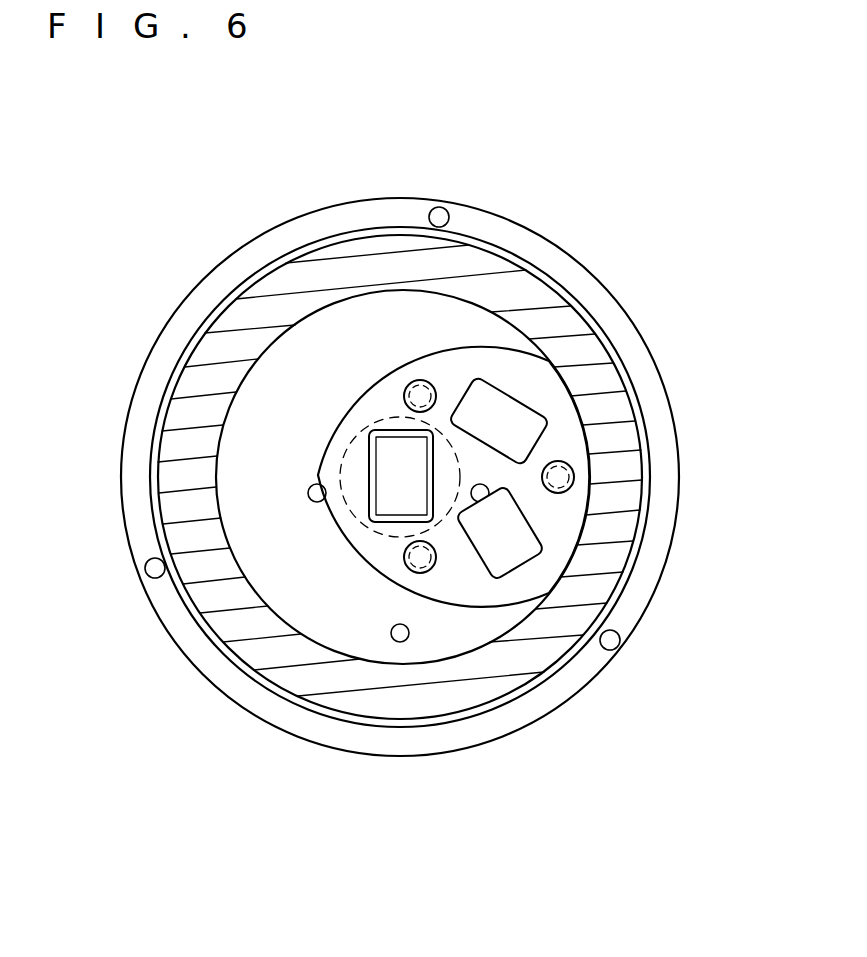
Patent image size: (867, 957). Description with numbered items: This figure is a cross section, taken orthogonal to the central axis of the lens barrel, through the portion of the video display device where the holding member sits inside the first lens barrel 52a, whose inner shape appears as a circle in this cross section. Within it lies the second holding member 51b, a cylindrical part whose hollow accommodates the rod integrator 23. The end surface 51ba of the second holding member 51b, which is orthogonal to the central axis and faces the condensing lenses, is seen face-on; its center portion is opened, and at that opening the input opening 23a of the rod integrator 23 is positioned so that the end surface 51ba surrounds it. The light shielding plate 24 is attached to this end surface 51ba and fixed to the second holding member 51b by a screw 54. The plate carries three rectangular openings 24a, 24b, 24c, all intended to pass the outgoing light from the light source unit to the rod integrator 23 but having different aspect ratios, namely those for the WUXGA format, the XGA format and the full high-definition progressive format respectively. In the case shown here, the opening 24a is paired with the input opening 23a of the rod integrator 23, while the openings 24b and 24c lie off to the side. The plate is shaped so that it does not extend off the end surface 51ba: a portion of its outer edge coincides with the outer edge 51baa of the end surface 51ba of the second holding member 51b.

The rod integrator 23 is at (370, 470).
The input opening of the rod integrator 23a is at (397, 463).
The light shielding plate 24 is at (345, 520).
The opening 24a is at (398, 493).
The opening 24b is at (503, 546).
The opening 24c is at (508, 419).
The second holding member 51b is at (317, 337).
The end surface of the second holding member 51ba is at (233, 377).
The outer edge of the end surface 51baa is at (293, 390).
The first lens barrel 52a is at (363, 268).
The screw 54 is at (422, 393).